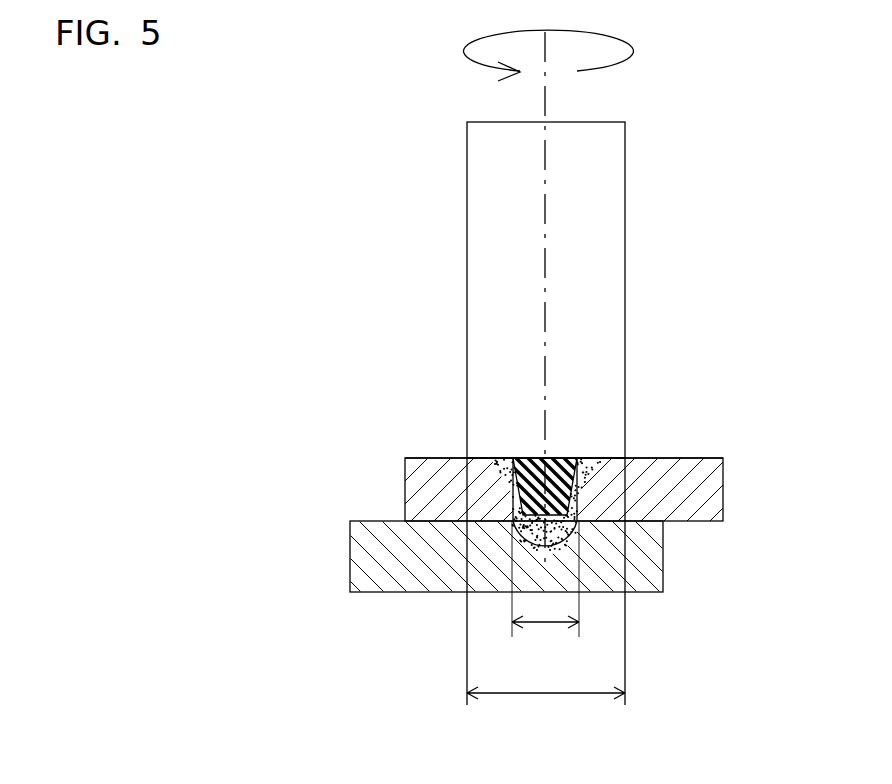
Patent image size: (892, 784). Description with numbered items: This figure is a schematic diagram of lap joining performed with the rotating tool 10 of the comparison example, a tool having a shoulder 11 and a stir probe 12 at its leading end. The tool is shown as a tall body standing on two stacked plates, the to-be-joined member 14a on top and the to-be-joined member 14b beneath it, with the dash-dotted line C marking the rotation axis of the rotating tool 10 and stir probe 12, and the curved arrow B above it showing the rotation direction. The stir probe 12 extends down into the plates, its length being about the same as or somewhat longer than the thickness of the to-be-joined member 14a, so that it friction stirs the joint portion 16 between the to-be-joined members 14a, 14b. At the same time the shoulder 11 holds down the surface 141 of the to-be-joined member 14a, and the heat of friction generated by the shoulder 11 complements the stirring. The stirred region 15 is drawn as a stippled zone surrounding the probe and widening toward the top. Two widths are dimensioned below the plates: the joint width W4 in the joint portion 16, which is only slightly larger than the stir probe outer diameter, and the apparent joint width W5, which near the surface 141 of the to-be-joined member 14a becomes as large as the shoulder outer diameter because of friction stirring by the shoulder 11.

The rotating tool 10 is at (625, 155).
The shoulder 11 is at (512, 490).
The stir probe 12 is at (512, 496).
The to-be-joined member 14a is at (723, 462).
The to-be-joined member 14b is at (664, 579).
The surface 141 is at (666, 458).
The plasticized (stirred) region 15 is at (580, 485).
The joint portion 16 is at (547, 546).
The rotation direction B is at (632, 50).
The rotation axis C is at (545, 108).
The joint width W4 is at (545, 590).
The apparent joint width W5 is at (546, 594).